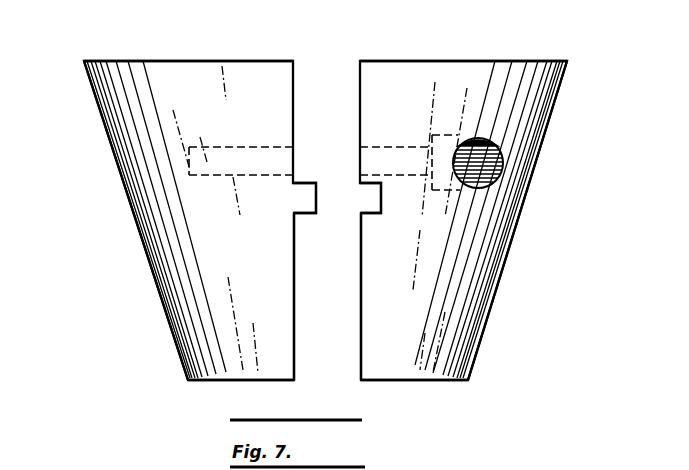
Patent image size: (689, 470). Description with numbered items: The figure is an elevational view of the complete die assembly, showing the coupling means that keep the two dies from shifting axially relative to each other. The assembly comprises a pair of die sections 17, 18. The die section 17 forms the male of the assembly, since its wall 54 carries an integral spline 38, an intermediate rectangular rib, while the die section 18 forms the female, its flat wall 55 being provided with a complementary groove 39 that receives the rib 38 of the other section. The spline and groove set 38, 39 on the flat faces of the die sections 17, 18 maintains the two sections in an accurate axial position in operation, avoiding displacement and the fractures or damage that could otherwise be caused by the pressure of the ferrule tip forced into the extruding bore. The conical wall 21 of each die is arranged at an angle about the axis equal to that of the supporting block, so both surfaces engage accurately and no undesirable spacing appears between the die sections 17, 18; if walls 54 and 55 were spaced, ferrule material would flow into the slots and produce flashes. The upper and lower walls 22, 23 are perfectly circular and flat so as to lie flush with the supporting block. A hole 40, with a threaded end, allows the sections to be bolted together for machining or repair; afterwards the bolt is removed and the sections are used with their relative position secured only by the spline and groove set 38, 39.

The die section 17 is at (110, 107).
The die section 18 is at (545, 108).
The conical wall 21 is at (133, 211).
The upper wall 22 is at (169, 61).
The lower wall 23 is at (381, 381).
The spline 38 is at (306, 193).
The groove 39 is at (372, 198).
The hole 40 is at (483, 163).
The wall 54 is at (295, 268).
The flat wall 55 is at (360, 298).